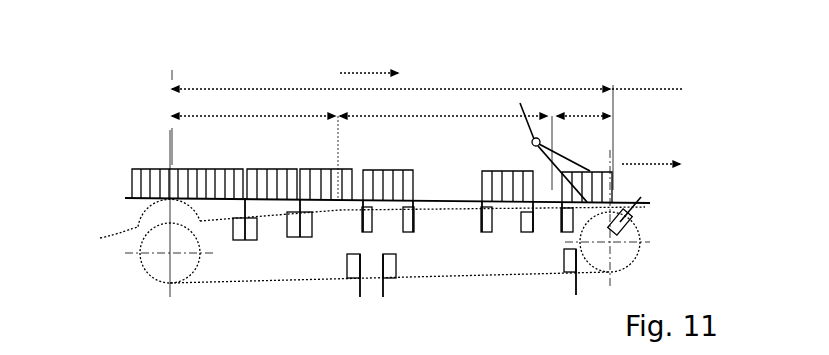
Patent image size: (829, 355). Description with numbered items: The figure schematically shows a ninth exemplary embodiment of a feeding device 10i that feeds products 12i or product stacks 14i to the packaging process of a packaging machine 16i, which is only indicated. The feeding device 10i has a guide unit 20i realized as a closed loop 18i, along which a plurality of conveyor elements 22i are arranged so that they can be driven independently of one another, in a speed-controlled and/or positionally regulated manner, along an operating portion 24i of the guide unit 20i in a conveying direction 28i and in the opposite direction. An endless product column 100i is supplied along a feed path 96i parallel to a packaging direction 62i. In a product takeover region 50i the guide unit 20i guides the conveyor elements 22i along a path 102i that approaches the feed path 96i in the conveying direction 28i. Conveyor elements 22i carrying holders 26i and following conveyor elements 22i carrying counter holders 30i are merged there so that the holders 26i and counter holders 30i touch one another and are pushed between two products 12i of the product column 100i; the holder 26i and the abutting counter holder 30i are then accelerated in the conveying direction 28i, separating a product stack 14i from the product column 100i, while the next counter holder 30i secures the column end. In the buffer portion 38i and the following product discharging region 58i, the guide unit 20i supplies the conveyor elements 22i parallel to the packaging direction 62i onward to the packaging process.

The feeding device 10i is at (597, 108).
The products 12i is at (250, 170).
The product stacks 14i is at (263, 169).
The packaging machine 16i is at (597, 158).
The closed loop 18i is at (215, 283).
The guide unit 20i is at (132, 283).
The conveyor elements 22i is at (404, 229).
The operating portion 24i is at (303, 88).
The holders 26i is at (479, 180).
The conveying direction 28i is at (368, 73).
The counter holders 30i is at (543, 190).
The buffer portion 38i is at (450, 115).
The product takeover region 50i is at (235, 115).
The product discharging region 58i is at (578, 115).
The packaging direction 62i is at (653, 164).
The feed path 96i is at (133, 208).
The product column 100i is at (316, 157).
The path 102i is at (100, 238).